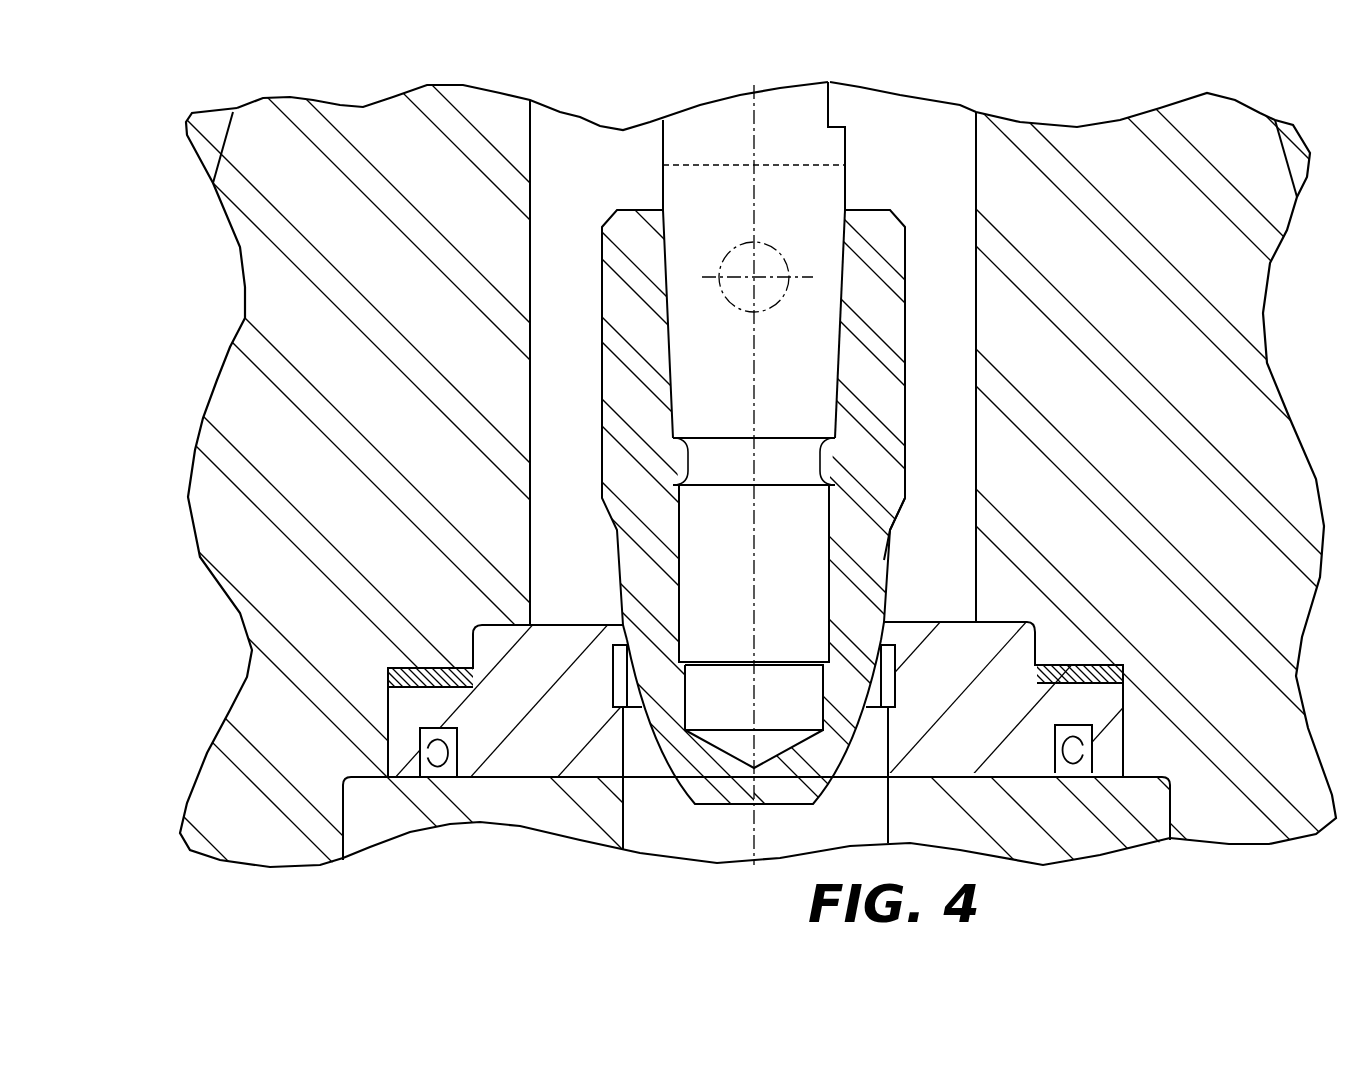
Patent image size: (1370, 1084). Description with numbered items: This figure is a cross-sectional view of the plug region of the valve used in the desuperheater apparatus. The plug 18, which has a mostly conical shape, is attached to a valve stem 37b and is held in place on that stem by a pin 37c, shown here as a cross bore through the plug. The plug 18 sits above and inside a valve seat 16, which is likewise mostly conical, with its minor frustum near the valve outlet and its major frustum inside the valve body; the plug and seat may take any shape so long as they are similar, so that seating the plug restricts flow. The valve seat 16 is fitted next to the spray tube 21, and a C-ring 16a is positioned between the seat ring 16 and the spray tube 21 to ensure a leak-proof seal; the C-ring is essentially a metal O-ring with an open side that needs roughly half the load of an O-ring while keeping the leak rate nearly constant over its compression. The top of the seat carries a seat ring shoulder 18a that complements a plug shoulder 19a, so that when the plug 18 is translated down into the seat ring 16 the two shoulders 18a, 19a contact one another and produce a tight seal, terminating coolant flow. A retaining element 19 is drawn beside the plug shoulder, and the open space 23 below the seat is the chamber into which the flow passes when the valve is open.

The valve seat 16 is at (1037, 642).
The C-ring 16a is at (432, 753).
The plug 18 is at (906, 394).
The seat ring shoulder 18a is at (890, 522).
The retaining ring 19 is at (892, 677).
The plug shoulder 19a is at (903, 632).
The spray tube 21 is at (1152, 799).
The chamber 23 is at (679, 835).
The valve stem 37b is at (827, 192).
The pin 37c is at (760, 277).